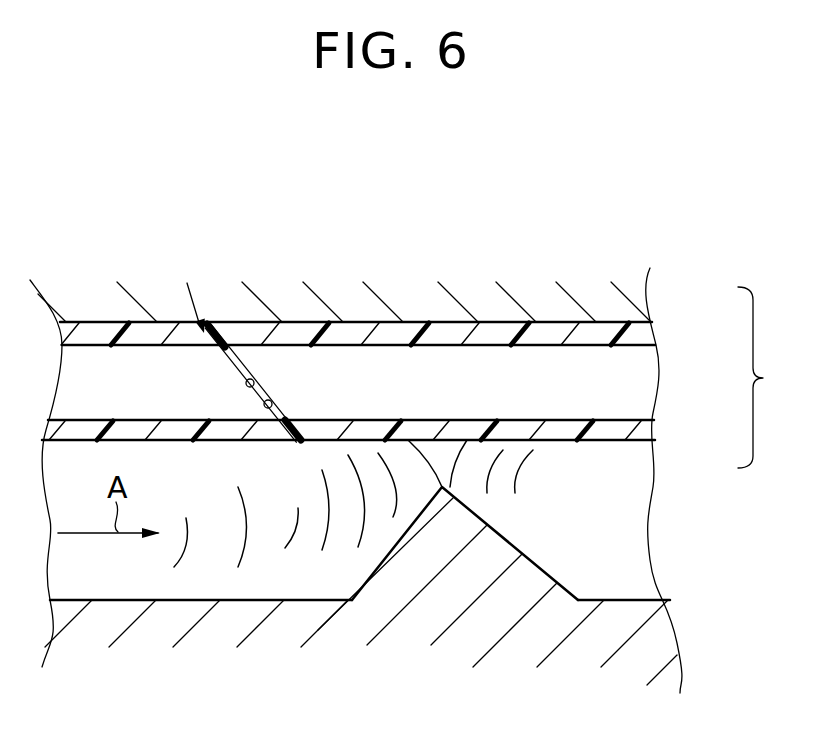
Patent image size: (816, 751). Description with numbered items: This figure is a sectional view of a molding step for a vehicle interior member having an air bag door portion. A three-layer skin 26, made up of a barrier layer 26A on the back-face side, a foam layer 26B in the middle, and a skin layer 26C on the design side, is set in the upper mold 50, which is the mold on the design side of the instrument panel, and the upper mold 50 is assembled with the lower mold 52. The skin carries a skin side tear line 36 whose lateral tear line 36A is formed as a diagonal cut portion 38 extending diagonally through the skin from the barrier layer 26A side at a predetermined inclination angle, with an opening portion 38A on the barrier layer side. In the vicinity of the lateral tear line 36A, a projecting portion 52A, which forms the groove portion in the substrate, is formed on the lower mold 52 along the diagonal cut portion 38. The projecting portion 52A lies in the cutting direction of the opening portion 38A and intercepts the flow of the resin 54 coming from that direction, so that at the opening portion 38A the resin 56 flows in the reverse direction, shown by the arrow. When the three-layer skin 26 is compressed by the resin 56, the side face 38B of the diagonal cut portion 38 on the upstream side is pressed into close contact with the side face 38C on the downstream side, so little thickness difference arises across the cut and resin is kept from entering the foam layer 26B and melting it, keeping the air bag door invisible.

The three-layer skin 26 is at (774, 377).
The barrier layer 26A is at (645, 430).
The foam layer 26B is at (643, 383).
The skin layer 26C is at (645, 332).
The skin side tear line 36 is at (188, 323).
The lateral tear line 36A is at (219, 341).
The diagonal cut portion 38 is at (284, 413).
The opening portion 38A is at (300, 441).
The side face 38B is at (251, 379).
The side face 38C is at (269, 400).
The upper mold 50 is at (650, 278).
The lower mold 52 is at (613, 623).
The projecting portion 52A is at (478, 517).
The resin 54 is at (640, 488).
The resin 56 is at (116, 583).